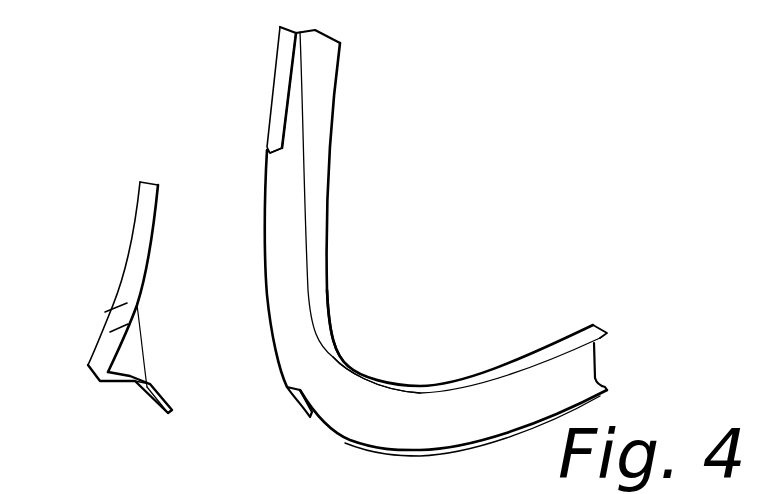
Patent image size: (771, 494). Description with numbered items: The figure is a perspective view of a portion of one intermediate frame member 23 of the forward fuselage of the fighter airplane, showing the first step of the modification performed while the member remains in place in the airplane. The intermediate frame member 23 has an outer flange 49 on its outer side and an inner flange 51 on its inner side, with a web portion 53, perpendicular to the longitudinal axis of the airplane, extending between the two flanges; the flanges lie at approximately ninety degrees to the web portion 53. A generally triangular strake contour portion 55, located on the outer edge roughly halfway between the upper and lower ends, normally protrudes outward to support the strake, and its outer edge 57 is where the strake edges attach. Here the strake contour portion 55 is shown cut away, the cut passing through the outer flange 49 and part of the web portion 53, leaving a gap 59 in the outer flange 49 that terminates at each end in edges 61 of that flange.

The intermediate frame member 23 is at (328, 230).
The outer flange 49 is at (282, 72).
The inner flange 51 is at (330, 297).
The web portion 53 is at (337, 388).
The strake contour portion 55 is at (132, 238).
The outer edge 57 is at (88, 372).
The gap 59 is at (267, 155).
The edges 61 is at (287, 388).